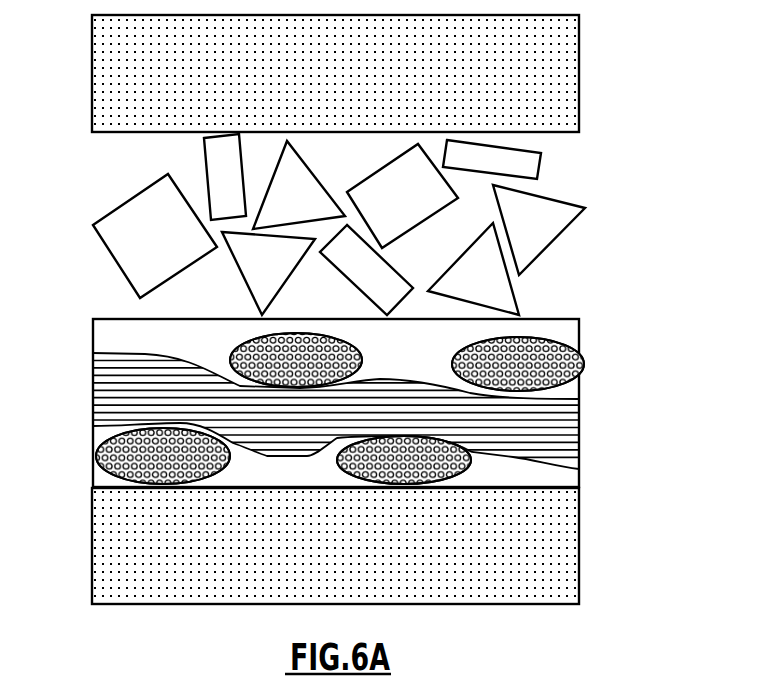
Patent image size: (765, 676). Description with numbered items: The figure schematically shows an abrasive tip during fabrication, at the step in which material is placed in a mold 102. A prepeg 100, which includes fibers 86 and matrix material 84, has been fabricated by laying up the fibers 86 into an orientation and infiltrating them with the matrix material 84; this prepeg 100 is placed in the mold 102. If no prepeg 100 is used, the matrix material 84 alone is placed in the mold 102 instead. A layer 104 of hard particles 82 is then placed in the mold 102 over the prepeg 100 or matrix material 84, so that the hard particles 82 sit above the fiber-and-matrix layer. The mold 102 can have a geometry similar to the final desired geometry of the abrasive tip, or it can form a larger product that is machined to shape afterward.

The hard particles 82 is at (132, 238).
The matrix material 84 is at (112, 338).
The fibers 86 is at (108, 403).
The prepeg 100 is at (352, 406).
The mold 102 is at (571, 68).
The layer of hard particles 104 is at (370, 221).